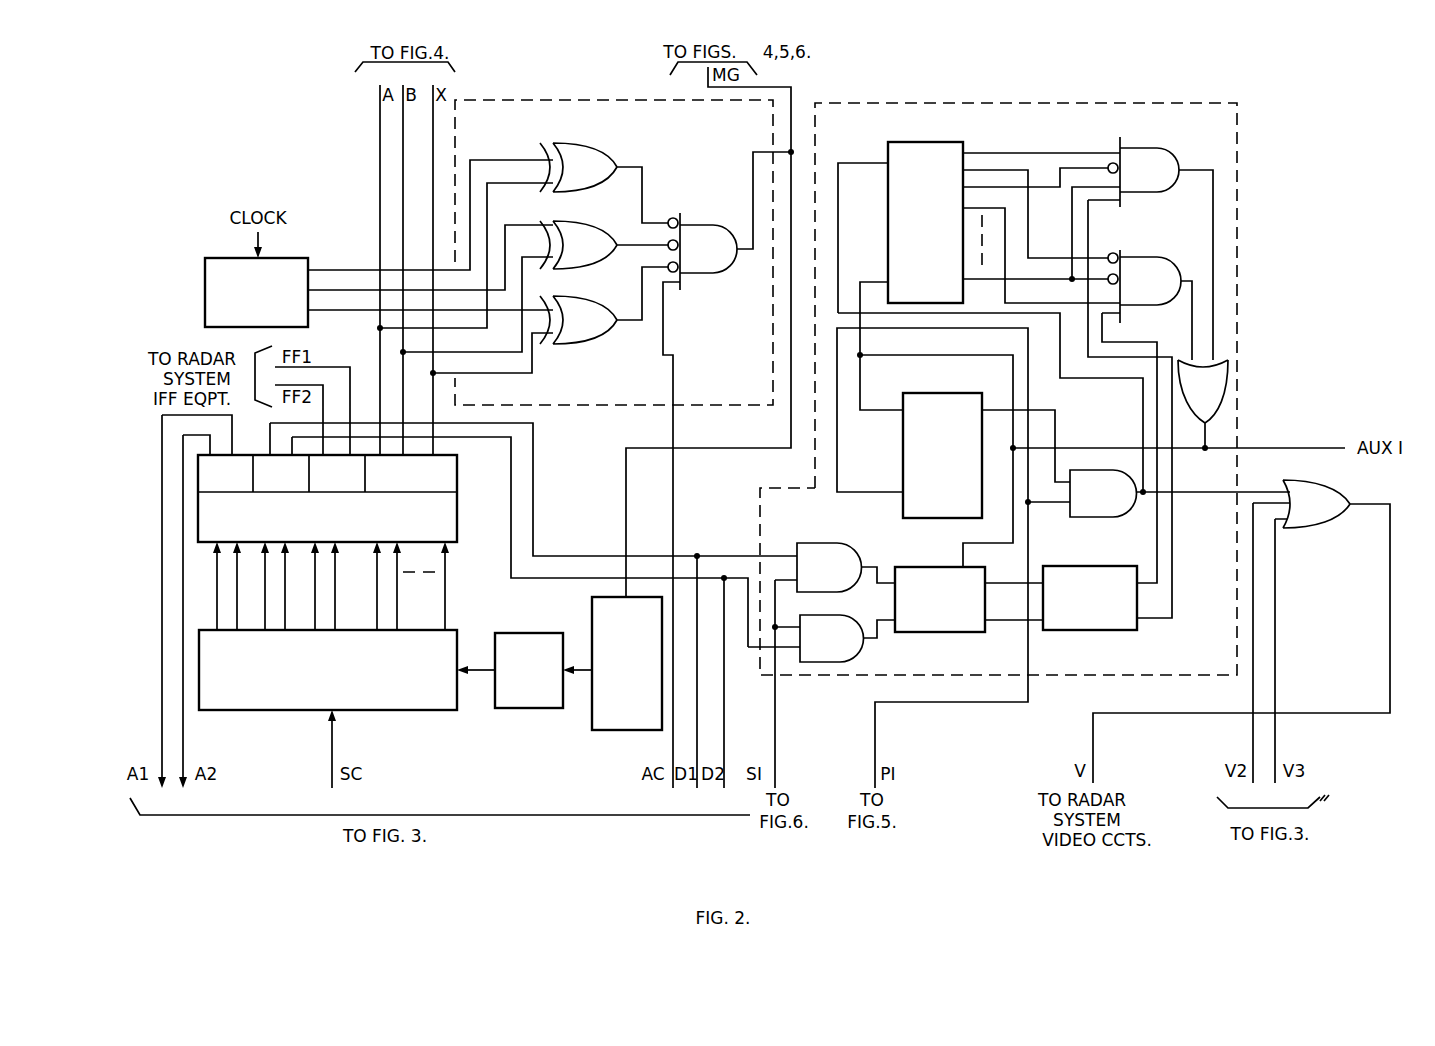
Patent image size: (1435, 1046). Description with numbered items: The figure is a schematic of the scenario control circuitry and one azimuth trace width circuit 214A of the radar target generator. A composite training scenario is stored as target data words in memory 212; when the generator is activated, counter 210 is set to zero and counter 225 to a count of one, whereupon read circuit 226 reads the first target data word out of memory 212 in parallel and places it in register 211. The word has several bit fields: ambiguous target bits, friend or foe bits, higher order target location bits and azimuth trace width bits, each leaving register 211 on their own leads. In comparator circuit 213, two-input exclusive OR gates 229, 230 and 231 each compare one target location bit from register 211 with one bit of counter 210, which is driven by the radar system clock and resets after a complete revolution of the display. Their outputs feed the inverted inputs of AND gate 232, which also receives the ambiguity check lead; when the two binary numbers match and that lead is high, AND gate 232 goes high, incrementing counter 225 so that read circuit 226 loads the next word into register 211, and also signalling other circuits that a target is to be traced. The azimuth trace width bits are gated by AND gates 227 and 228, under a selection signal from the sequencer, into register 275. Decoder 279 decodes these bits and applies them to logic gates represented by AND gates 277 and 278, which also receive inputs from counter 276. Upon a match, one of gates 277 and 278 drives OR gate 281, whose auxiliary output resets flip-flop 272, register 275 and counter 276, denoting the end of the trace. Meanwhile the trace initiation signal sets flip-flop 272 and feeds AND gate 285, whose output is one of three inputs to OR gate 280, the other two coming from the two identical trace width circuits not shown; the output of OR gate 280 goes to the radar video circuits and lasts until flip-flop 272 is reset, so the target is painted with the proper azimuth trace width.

The counter 210 is at (379, 243).
The register 211 is at (458, 500).
The memory 212 is at (459, 631).
The comparator circuit 213 is at (560, 101).
The azimuth trace width circuit 214A is at (1090, 104).
The counter 225 is at (630, 598).
The read circuit 226 is at (524, 633).
The AND gate 227 is at (826, 545).
The AND gate 228 is at (809, 616).
The exclusive OR gate 229 is at (594, 156).
The exclusive OR gate 230 is at (585, 227).
The exclusive OR gate 231 is at (582, 303).
The AND gate 232 is at (697, 227).
The flip-flop 272 is at (933, 395).
The register 275 is at (910, 566).
The counter 276 is at (963, 154).
The AND gate 277 is at (1163, 152).
The AND gate 278 is at (1153, 264).
The decoder 279 is at (1080, 566).
The OR gate 280 is at (1309, 481).
The OR gate 281 is at (1230, 386).
The AND gate 285 is at (1089, 472).